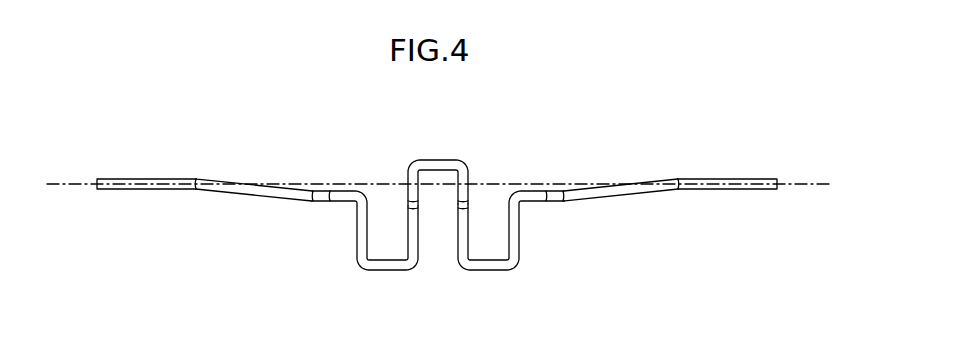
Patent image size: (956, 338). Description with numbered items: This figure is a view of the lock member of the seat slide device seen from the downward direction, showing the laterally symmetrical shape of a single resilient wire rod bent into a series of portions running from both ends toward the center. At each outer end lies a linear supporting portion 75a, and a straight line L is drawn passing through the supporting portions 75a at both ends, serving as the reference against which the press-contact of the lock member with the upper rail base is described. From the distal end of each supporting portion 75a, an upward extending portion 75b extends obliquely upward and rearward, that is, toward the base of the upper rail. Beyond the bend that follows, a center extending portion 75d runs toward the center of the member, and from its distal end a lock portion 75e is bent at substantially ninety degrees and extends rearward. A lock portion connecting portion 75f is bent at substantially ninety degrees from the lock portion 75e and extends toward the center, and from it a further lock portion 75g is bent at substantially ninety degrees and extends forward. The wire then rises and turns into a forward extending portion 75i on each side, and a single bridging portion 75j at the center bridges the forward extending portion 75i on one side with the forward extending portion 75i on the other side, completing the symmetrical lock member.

The linear supporting portion 75a is at (165, 180).
The upward extending portion 75b is at (253, 183).
The center extending portion 75d is at (343, 195).
The lock portion 75e is at (362, 235).
The lock portion connecting portion 75f is at (375, 265).
The lock portion 75g is at (414, 240).
The forward extending portion 75i is at (413, 187).
The bridging portion 75j is at (436, 163).
The straight line L is at (811, 186).